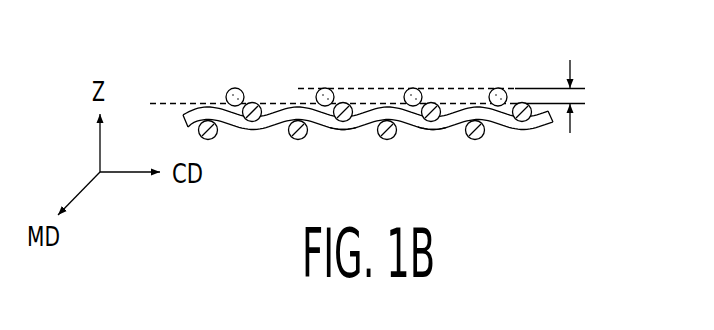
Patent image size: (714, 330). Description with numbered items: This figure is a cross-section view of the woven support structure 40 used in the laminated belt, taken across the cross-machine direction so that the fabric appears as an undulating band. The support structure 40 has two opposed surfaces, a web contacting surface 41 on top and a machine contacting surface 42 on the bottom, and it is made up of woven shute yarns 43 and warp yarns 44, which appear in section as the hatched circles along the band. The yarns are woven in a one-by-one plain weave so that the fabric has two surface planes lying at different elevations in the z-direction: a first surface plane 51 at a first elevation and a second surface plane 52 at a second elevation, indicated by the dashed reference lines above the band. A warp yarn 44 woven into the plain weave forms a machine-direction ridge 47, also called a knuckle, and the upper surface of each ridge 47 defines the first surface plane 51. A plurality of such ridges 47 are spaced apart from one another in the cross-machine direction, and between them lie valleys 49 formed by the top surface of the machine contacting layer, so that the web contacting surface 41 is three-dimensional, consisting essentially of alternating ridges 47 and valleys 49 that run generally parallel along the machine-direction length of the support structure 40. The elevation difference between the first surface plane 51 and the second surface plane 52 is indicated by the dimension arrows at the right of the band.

The support structure 40 is at (548, 137).
The web contacting surface 41 is at (242, 72).
The machine contacting surface 42 is at (343, 135).
The shute yarns 43 is at (412, 88).
The warp yarns 44 is at (428, 132).
The ridge 47 is at (330, 78).
The valleys 49 is at (268, 90).
The first surface plane 51 is at (547, 88).
The second surface plane 52 is at (583, 105).